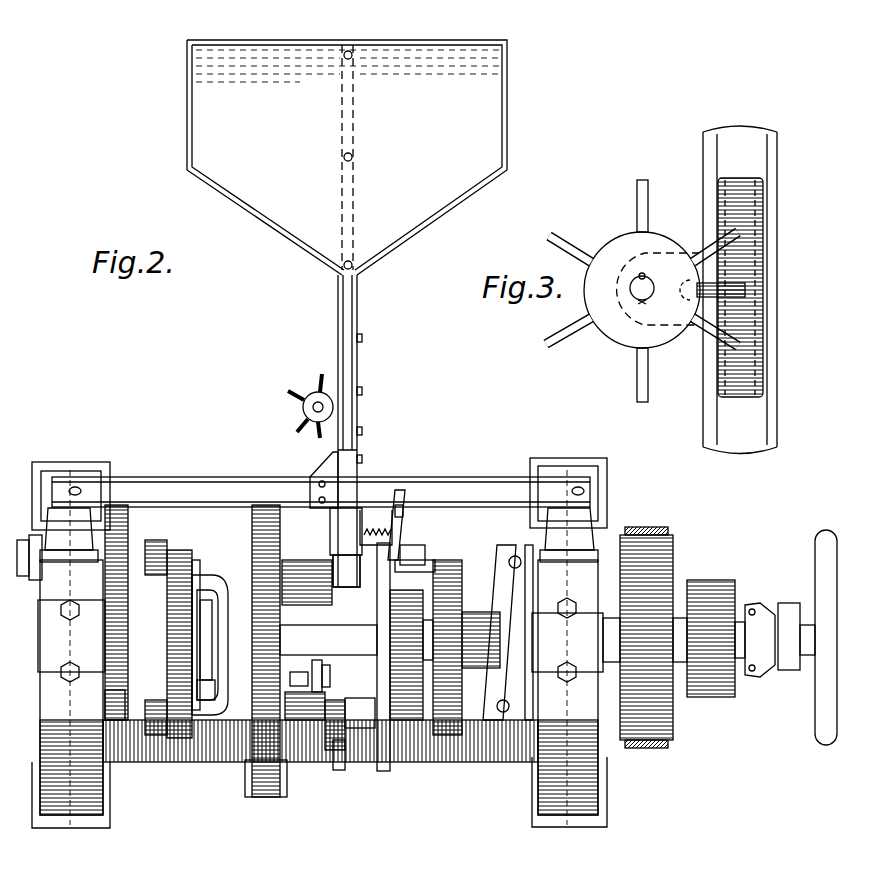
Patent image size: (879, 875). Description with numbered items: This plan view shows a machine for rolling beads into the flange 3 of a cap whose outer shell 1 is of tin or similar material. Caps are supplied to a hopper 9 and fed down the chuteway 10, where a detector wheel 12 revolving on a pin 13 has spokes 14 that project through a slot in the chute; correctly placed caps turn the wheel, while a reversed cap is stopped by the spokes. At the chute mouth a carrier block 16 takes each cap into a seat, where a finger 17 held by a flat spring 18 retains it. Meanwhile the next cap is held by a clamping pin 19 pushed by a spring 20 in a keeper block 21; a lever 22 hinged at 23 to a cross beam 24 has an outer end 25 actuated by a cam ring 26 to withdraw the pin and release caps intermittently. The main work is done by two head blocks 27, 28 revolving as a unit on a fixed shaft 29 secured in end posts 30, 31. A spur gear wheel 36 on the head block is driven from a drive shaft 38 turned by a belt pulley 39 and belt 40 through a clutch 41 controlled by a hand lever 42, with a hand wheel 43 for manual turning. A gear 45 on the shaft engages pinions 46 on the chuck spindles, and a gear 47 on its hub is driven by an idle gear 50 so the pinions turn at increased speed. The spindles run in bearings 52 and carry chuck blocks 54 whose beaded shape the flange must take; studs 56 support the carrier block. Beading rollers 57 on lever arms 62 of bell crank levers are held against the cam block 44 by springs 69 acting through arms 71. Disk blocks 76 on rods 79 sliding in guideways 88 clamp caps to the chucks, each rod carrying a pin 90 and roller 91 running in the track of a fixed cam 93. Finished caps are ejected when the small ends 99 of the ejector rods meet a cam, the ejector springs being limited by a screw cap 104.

In FIG. 3, the outer shell 1 is at (752, 212).
In FIG. 3, the flange 3 is at (741, 180).
In FIG. 2, the hopper 9 is at (347, 157).
In FIG. 2, the chuteway 10 is at (350, 306).
In FIG. 3, the chuteway 10 is at (740, 290).
In FIG. 2, the detector wheel 12 is at (312, 422).
In FIG. 3, the detector wheel 12 is at (606, 340).
In FIG. 3, the pin 13 is at (640, 285).
In FIG. 2, the spokes 14 is at (312, 378).
In FIG. 3, the spokes 14 is at (570, 240).
In FIG. 2, the carrier block 16 is at (358, 728).
In FIG. 2, the finger 17 is at (353, 583).
In FIG. 2, the flat spring 18 is at (336, 545).
In FIG. 2, the clamping pin 19 is at (400, 548).
In FIG. 2, the spring 20 is at (366, 528).
In FIG. 2, the keeper block 21 is at (376, 530).
In FIG. 2, the lever 22 is at (408, 525).
In FIG. 2, the hinge 23 is at (398, 510).
In FIG. 2, the cross beam 24 is at (486, 492).
In FIG. 2, the outer end of lever 25 is at (400, 560).
In FIG. 2, the cam ring 26 is at (385, 772).
In FIG. 2, the head block 27 is at (221, 644).
In FIG. 2, the head block 28 is at (406, 655).
In FIG. 2, the fixed shaft 29 is at (30, 580).
In FIG. 2, the end post 30 is at (578, 760).
In FIG. 2, the end post 31 is at (80, 775).
In FIG. 2, the spur gear wheel 36 is at (262, 775).
In FIG. 2, the drive shaft 38 is at (22, 665).
In FIG. 2, the belt pulley 39 is at (658, 560).
In FIG. 2, the belt 40 is at (660, 527).
In FIG. 2, the clutch 41 is at (727, 585).
In FIG. 2, the hand lever 42 is at (784, 603).
In FIG. 2, the hand wheel 43 is at (815, 735).
In FIG. 2, the cam block 44 is at (210, 635).
In FIG. 2, the gear 45 is at (216, 665).
In FIG. 2, the pinions 46 is at (178, 548).
In FIG. 2, the gear 47 is at (125, 718).
In FIG. 2, the idle gear 50 is at (122, 505).
In FIG. 2, the bearings 52 is at (292, 795).
In FIG. 2, the chuck blocks 54 is at (310, 520).
In FIG. 2, the studs 56 is at (325, 666).
In FIG. 2, the beading rollers 57 is at (305, 706).
In FIG. 2, the lever arm 62 is at (305, 672).
In FIG. 2, the springs 69 is at (216, 608).
In FIG. 2, the arm 71 is at (205, 580).
In FIG. 2, the disk block 76 is at (338, 770).
In FIG. 2, the rods 79 is at (488, 568).
In FIG. 2, the guideways 88 is at (455, 562).
In FIG. 2, the pin 90 is at (515, 556).
In FIG. 2, the roller 91 is at (546, 700).
In FIG. 2, the fixed cam 93 is at (572, 697).
In FIG. 2, the small ends 99 is at (118, 520).
In FIG. 2, the screw cap 104 is at (156, 537).